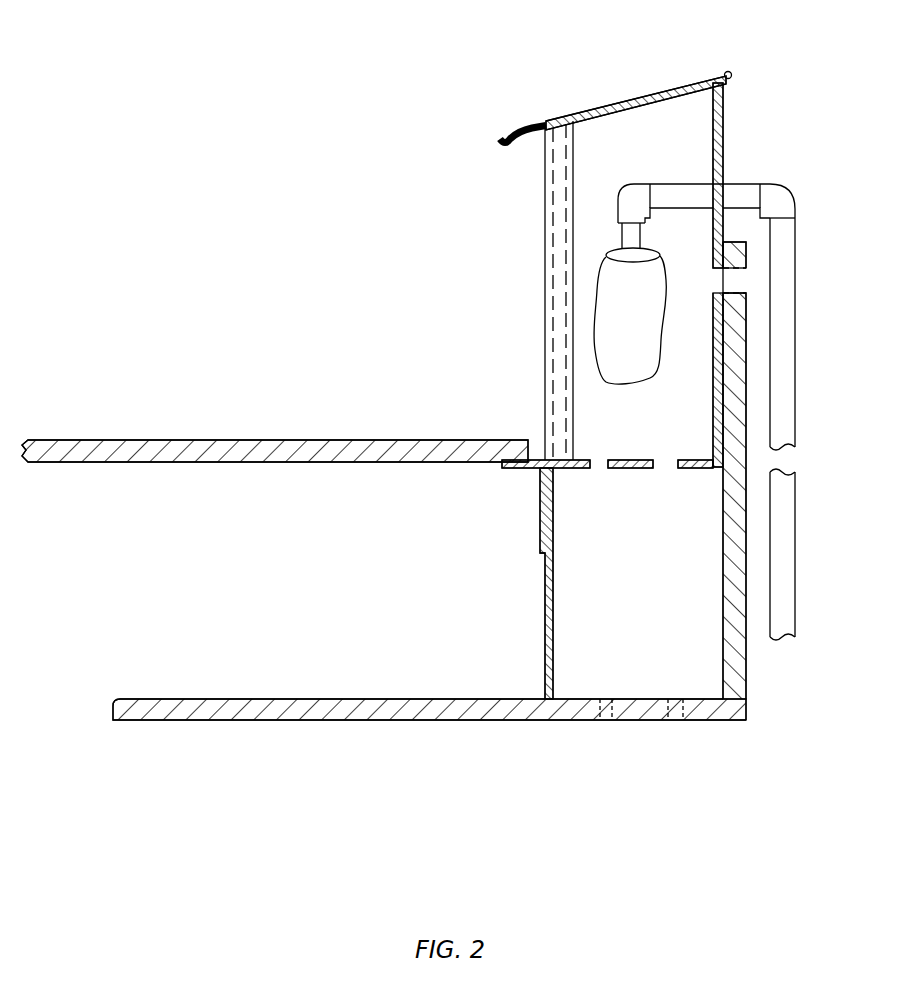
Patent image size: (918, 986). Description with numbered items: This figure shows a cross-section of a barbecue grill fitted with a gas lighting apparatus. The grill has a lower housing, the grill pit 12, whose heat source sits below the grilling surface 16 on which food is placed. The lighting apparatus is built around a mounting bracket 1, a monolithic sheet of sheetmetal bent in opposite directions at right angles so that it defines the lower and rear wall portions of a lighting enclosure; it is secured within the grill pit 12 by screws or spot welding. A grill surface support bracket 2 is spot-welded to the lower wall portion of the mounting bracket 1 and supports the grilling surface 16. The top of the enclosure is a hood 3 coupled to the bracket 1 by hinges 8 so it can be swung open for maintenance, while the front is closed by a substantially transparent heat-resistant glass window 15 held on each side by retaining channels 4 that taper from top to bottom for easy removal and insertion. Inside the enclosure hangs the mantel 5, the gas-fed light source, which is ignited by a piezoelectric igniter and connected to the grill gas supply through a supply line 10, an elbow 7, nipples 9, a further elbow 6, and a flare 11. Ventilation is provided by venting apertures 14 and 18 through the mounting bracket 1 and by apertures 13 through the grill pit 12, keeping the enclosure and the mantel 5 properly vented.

The mounting bracket 1 is at (632, 505).
The grill surface support bracket 2 is at (513, 477).
The hood 3 is at (557, 118).
The retaining channels 4 is at (554, 290).
The mantel 5 is at (597, 248).
The elbow 6 is at (694, 171).
The elbow 7 is at (816, 176).
The hinges 8 is at (765, 44).
The nipples 9 is at (667, 196).
The supply line 10 is at (783, 314).
The flare 11 is at (624, 233).
The grill pit 12 is at (429, 679).
The apertures 13 is at (602, 723).
The venting apertures 14 is at (598, 453).
The window 15 is at (515, 292).
The grilling surface 16 is at (275, 419).
The venting aperture 18 is at (712, 282).